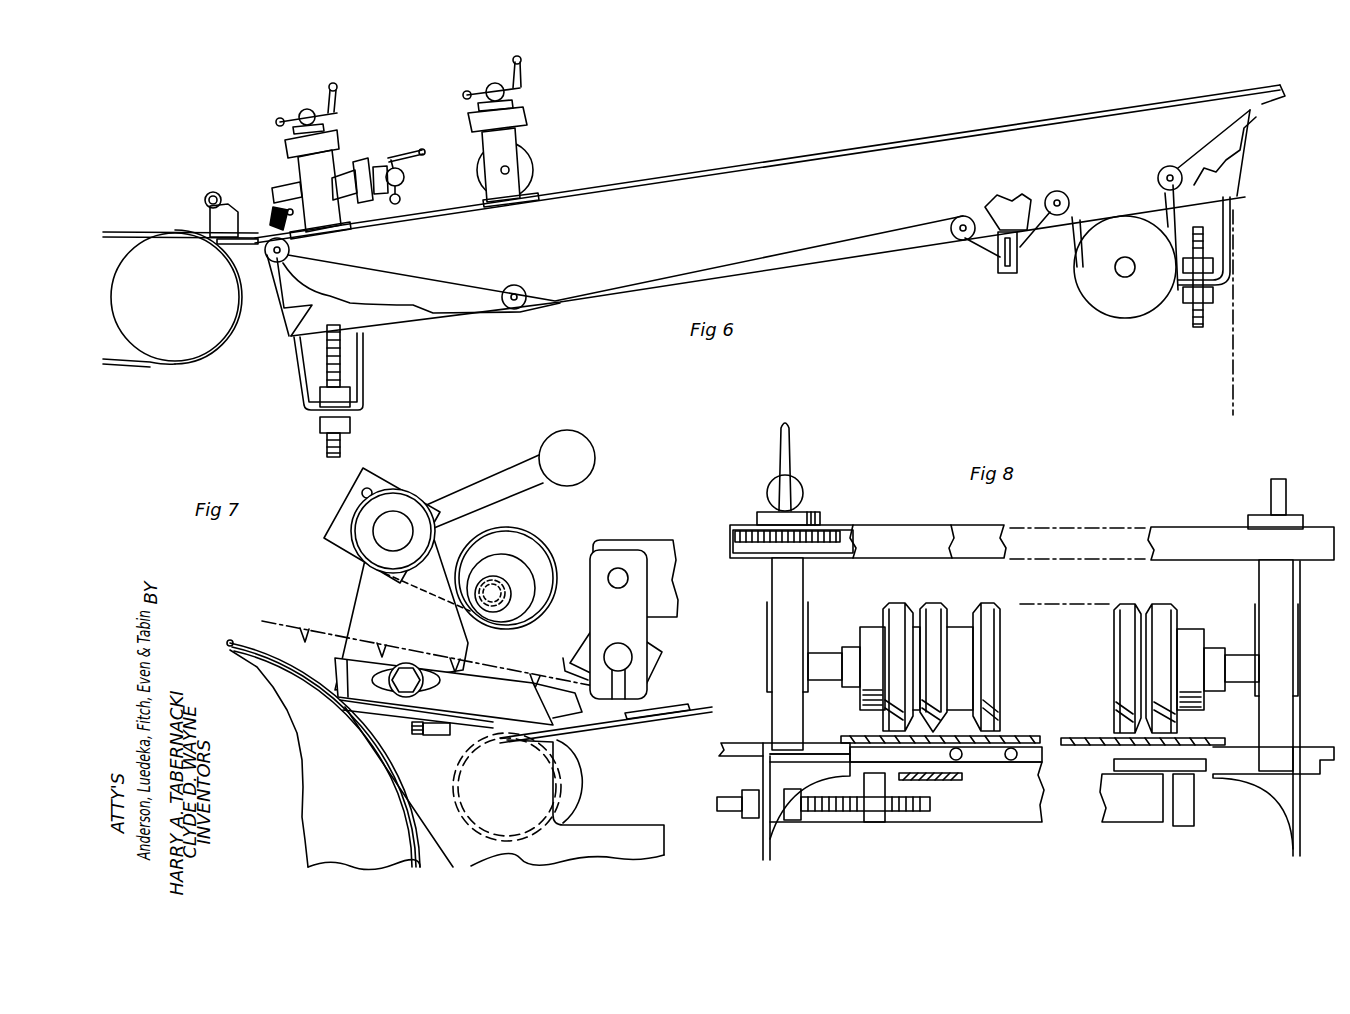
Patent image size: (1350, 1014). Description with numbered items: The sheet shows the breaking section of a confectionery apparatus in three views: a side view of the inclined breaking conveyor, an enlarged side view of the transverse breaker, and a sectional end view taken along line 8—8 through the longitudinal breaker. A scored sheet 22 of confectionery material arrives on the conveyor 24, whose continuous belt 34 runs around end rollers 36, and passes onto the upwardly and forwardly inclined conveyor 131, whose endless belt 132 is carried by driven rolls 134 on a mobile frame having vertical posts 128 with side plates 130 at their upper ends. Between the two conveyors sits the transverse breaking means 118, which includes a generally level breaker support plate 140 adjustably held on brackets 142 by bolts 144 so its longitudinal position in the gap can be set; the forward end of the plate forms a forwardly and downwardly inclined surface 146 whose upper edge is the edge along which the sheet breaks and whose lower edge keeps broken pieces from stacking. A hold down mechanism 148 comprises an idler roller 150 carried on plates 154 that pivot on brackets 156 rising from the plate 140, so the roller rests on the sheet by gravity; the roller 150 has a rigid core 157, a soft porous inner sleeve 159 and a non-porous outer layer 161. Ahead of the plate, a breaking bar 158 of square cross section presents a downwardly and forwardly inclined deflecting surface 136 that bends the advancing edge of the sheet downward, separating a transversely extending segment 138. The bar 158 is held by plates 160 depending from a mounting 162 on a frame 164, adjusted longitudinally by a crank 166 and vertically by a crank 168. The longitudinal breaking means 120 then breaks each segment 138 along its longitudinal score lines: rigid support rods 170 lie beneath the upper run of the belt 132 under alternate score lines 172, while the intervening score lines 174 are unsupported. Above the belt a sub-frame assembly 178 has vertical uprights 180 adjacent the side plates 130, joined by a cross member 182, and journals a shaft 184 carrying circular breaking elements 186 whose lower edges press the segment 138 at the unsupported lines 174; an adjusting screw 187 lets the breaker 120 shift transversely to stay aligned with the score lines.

In FIG. 6, the section line 8— 8 is at (527, 48).
In FIG. 7, the sheet of confectionery material 22 is at (268, 614).
In FIG. 6, the conveyor 24 is at (119, 227).
In FIG. 7, the conveyor 24 is at (226, 637).
In FIG. 6, the continuous belt 34 is at (135, 365).
In FIG. 7, the continuous belt 34 is at (233, 640).
In FIG. 6, the rollers 36 is at (163, 283).
In FIG. 7, the rollers 36 is at (328, 778).
In FIG. 6, the transverse breaking means 118 is at (250, 180).
In FIG. 7, the transverse breaking means 118 is at (584, 513).
In FIG. 6, the longitudinal breaking means 120 is at (533, 114).
In FIG. 8, the longitudinal breaking means 120 is at (1120, 503).
In FIG. 6, the vertical posts 128 is at (343, 439).
In FIG. 6, the side plates 130 is at (363, 313).
In FIG. 8, the side plates 130 is at (737, 745).
In FIG. 6, the inclined conveyor 131 is at (753, 162).
In FIG. 7, the inclined conveyor 131 is at (703, 700).
In FIG. 6, the endless belt 132 is at (422, 293).
In FIG. 7, the endless belt 132 is at (666, 724).
In FIG. 6, the rolls 134 is at (290, 250).
In FIG. 7, the rolls 134 is at (581, 785).
In FIG. 7, the deflecting surface 136 is at (560, 665).
In FIG. 7, the transversely extending segment 138 is at (655, 710).
In FIG. 8, the transversely extending segment 138 is at (1001, 730).
In FIG. 7, the breaker support plate 140 is at (483, 703).
In FIG. 7, the brackets 142 is at (495, 781).
In FIG. 7, the bolts 144 is at (432, 738).
In FIG. 7, the forwardly downwardly inclined surface 146 is at (556, 716).
In FIG. 7, the hold down mechanism 148 is at (432, 496).
In FIG. 7, the idler roller 150 is at (522, 562).
In FIG. 7, the plates 154 is at (381, 479).
In FIG. 7, the brackets 156 is at (381, 624).
In FIG. 7, the rigid core 157 is at (528, 597).
In FIG. 6, the breaking bar 158 is at (272, 220).
In FIG. 7, the breaking bar 158 is at (662, 652).
In FIG. 7, the inner sleeve 159 is at (538, 567).
In FIG. 6, the plates 160 is at (293, 211).
In FIG. 7, the plates 160 is at (610, 610).
In FIG. 7, the outer layer 161 is at (502, 530).
In FIG. 6, the mounting 162 is at (281, 190).
In FIG. 7, the mounting 162 is at (663, 541).
In FIG. 6, the frame 164 is at (304, 182).
In FIG. 6, the crank 166 is at (405, 178).
In FIG. 6, the crank 168 is at (305, 108).
In FIG. 8, the support rods 170 is at (1017, 770).
In FIG. 8, the longitudinal score lines 172 is at (1072, 737).
In FIG. 8, the longitudinal score lines 174 is at (985, 775).
In FIG. 8, the sub-frame assembly 178 is at (1296, 516).
In FIG. 8, the vertical uprights 180 is at (774, 593).
In FIG. 8, the cross member 182 is at (906, 538).
In FIG. 8, the shaft 184 is at (824, 654).
In FIG. 8, the circular breaking elements 186 is at (958, 601).
In FIG. 8, the adjusting screw 187 is at (722, 812).